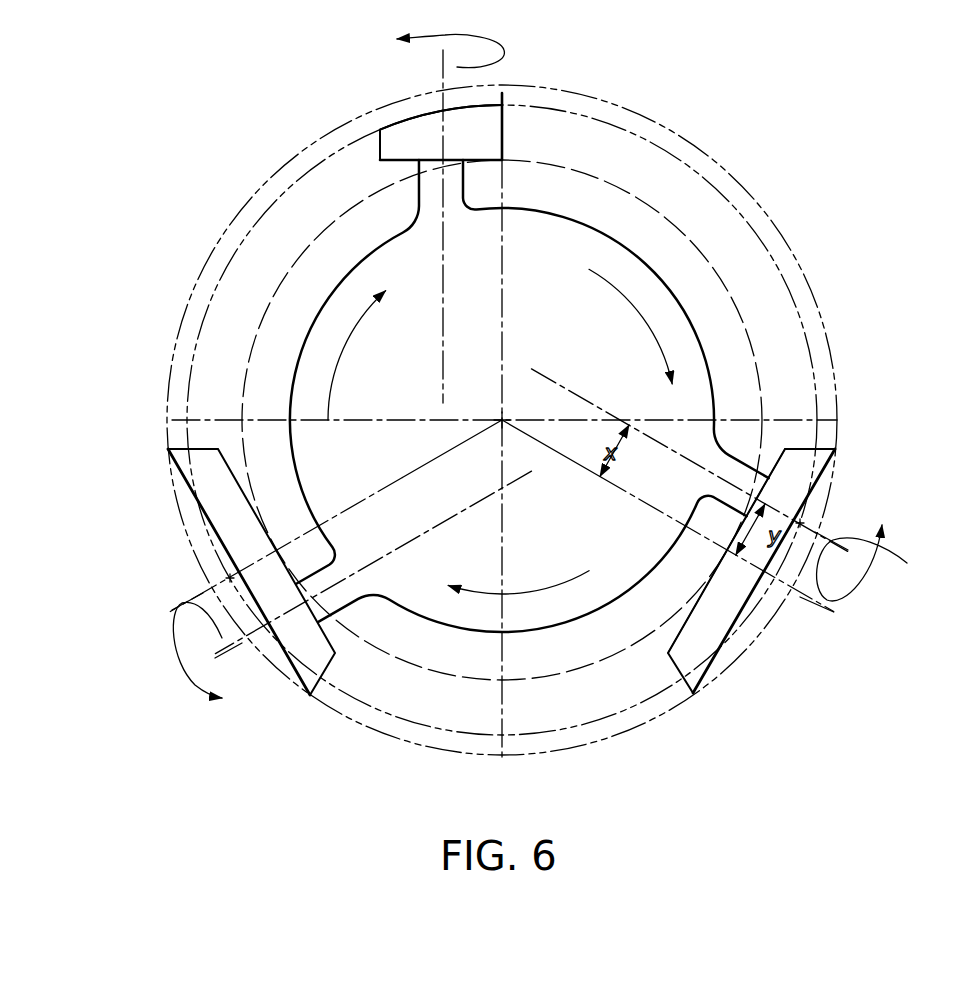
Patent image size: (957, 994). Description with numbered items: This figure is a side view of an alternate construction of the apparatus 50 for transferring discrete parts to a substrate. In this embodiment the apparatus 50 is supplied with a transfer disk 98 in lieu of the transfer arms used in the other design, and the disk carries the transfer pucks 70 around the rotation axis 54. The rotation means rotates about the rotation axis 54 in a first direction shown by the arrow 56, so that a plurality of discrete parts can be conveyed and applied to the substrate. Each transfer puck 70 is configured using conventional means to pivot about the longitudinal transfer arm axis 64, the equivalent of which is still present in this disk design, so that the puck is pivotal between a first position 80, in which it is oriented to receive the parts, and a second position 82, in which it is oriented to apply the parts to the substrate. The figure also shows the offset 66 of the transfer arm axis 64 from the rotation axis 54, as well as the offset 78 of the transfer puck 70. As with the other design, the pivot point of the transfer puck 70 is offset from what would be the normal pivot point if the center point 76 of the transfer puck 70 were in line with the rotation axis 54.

The apparatus 50 is at (174, 141).
The rotation axis 54 is at (502, 420).
The arrow 56 is at (346, 350).
The transfer arm axis 64 is at (238, 657).
The offset 66 is at (440, 55).
The transfer puck 70 is at (488, 127).
The center point 76 is at (748, 552).
The offset 78 is at (780, 477).
The first position 80 is at (748, 565).
The second position 82 is at (407, 121).
The transfer disk 98 is at (371, 473).